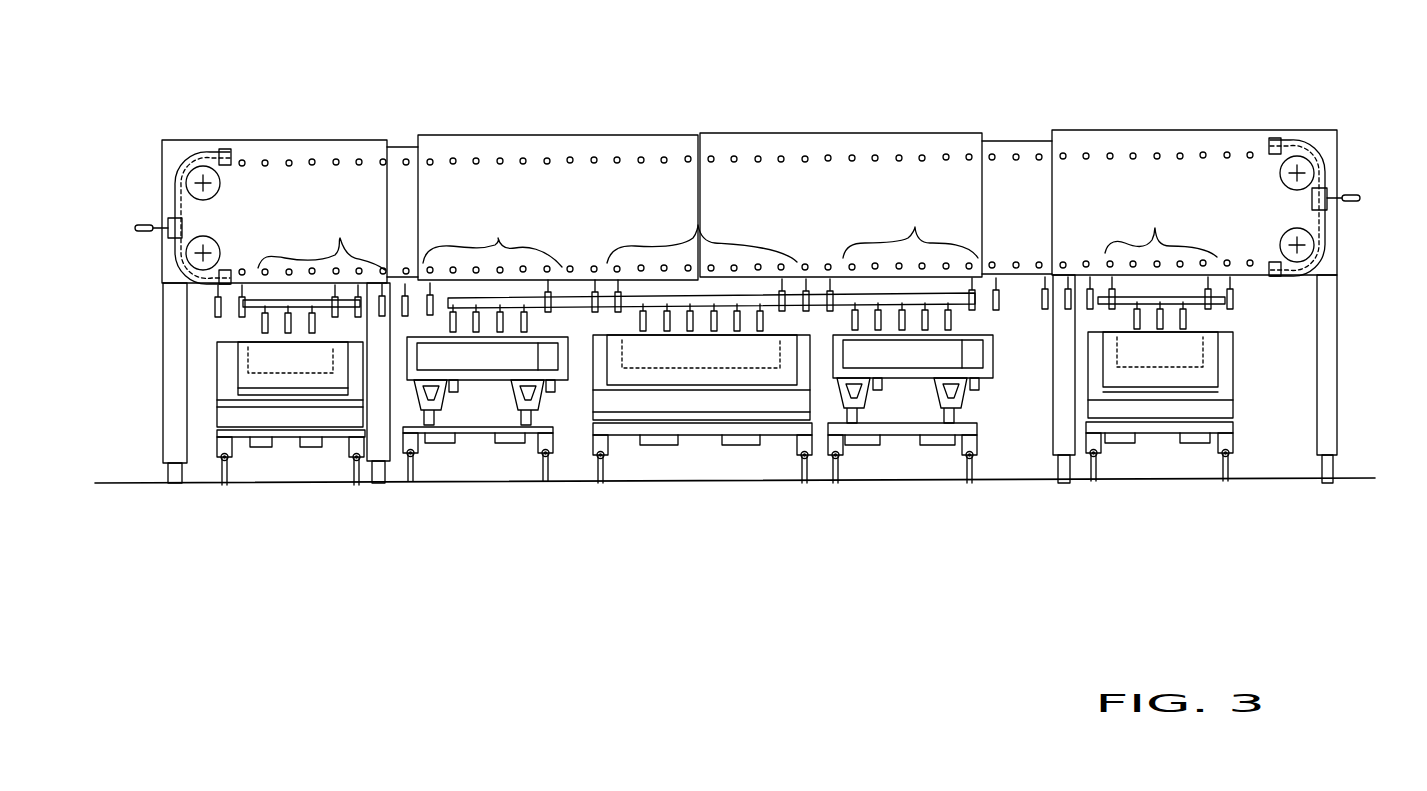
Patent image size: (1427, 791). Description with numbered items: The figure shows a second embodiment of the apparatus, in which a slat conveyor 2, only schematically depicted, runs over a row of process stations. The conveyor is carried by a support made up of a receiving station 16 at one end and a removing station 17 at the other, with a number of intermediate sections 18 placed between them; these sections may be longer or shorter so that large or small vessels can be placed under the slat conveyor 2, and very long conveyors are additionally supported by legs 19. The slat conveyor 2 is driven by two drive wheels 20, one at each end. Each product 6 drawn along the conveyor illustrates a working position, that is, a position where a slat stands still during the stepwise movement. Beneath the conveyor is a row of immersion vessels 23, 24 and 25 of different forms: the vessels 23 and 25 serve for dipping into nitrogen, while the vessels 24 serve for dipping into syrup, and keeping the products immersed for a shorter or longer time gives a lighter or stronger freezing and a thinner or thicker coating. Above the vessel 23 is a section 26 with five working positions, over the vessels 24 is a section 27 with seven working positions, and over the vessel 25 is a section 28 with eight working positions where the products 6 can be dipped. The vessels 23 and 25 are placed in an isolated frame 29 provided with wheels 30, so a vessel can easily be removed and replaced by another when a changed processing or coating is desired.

The slat conveyor 2 is at (1237, 285).
The product 6 is at (150, 222).
The receiving station 16 is at (319, 109).
The removing station 17 is at (1221, 103).
The intermediate section 18 is at (581, 103).
The leg 19 is at (1335, 420).
The drive wheel 20 is at (206, 166).
The immersion vessel 23 is at (300, 418).
The immersion vessel 24 is at (490, 360).
The immersion vessel 25 is at (712, 392).
The section 26 is at (325, 240).
The section 27 is at (518, 231).
The section 28 is at (708, 219).
The isolated frame 29 is at (243, 386).
The wheel 30 is at (239, 484).